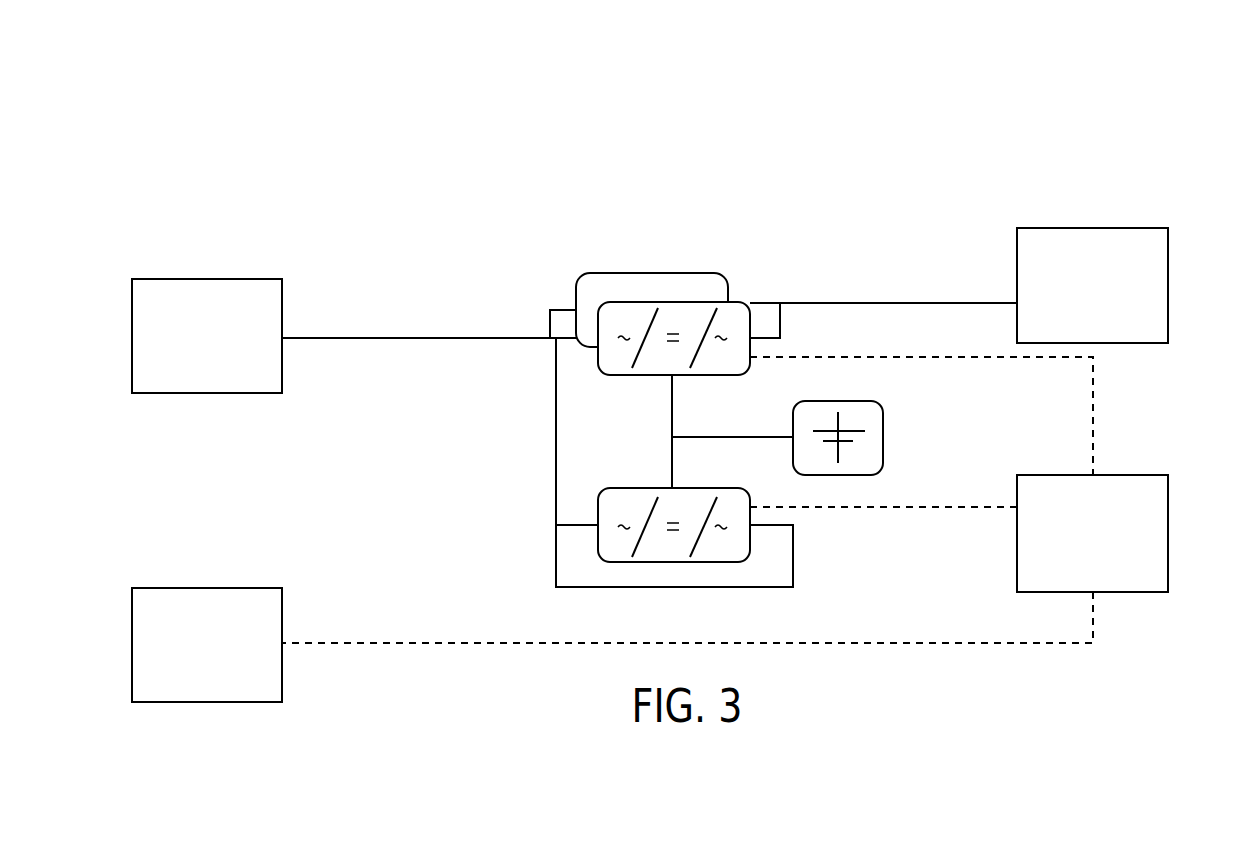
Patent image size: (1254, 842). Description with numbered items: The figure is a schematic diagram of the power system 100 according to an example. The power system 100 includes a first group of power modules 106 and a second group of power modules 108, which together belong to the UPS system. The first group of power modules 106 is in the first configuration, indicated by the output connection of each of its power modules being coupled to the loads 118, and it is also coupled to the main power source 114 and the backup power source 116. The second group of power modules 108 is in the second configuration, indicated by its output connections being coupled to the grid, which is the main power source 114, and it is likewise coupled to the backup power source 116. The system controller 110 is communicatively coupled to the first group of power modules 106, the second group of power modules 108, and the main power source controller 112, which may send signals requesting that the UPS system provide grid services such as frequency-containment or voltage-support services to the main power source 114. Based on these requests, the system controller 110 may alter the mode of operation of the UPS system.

The power system 100 is at (1042, 117).
The first group of power modules 106 is at (556, 293).
The second group of power modules 108 is at (635, 488).
The system controller 110 is at (1170, 532).
The main power source controller 112 is at (207, 704).
The main power source 114 is at (207, 395).
The backup power source 116 is at (885, 435).
The loads 118 is at (1170, 285).